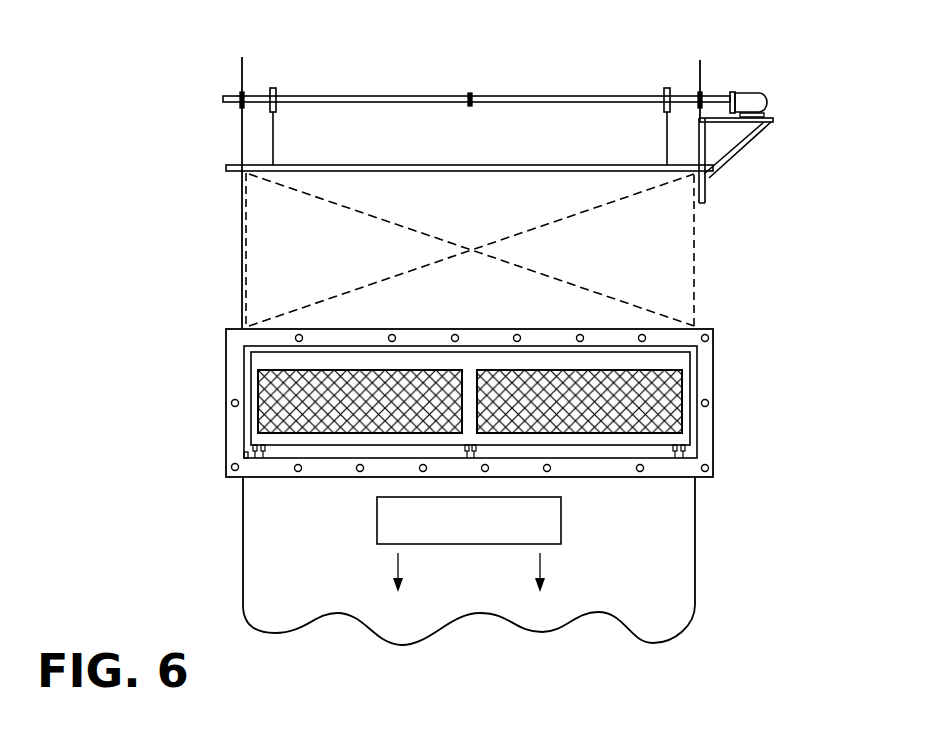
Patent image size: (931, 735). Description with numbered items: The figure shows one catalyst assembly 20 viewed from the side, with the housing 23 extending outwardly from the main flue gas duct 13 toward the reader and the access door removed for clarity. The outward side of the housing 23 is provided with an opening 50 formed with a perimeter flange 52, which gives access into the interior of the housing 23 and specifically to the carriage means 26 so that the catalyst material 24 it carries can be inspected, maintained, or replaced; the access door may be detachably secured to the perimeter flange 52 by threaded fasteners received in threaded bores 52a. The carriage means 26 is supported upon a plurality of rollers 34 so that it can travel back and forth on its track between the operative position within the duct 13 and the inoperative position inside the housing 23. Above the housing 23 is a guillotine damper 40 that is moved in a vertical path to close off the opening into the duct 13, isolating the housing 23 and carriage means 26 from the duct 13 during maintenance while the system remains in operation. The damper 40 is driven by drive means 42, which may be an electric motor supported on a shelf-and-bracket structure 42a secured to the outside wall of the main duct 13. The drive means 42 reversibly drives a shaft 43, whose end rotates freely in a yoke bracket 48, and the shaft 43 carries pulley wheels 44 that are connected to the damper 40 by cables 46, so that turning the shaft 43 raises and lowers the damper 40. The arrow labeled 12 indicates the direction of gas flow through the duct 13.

The assembly 20 is at (146, 227).
The shaft 43 is at (418, 97).
The yoke bracket 48 is at (247, 96).
The pulley wheels 44 is at (278, 90).
The cables 46 is at (275, 145).
The drive means 42 is at (750, 92).
The shelf-and-bracket structure 42a is at (755, 160).
The guillotine damper 40 is at (690, 275).
The perimeter flange 52 is at (229, 355).
The threaded bore 52a is at (231, 467).
The housing 23 is at (722, 400).
The carriage means 26 is at (683, 363).
The catalyst material 24 is at (417, 372).
The rollers 34 is at (696, 453).
The opening 50 is at (250, 458).
The flue gas duct 13 is at (695, 533).
The gas flow 12 is at (563, 514).